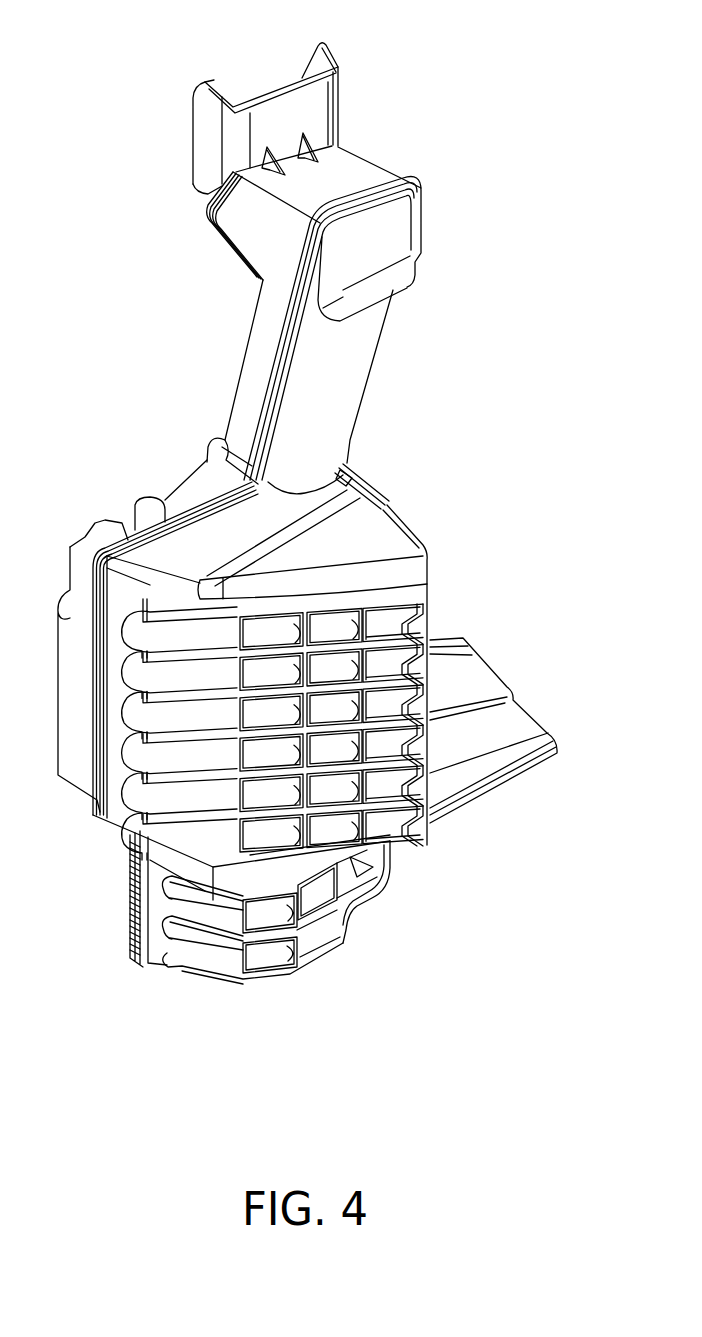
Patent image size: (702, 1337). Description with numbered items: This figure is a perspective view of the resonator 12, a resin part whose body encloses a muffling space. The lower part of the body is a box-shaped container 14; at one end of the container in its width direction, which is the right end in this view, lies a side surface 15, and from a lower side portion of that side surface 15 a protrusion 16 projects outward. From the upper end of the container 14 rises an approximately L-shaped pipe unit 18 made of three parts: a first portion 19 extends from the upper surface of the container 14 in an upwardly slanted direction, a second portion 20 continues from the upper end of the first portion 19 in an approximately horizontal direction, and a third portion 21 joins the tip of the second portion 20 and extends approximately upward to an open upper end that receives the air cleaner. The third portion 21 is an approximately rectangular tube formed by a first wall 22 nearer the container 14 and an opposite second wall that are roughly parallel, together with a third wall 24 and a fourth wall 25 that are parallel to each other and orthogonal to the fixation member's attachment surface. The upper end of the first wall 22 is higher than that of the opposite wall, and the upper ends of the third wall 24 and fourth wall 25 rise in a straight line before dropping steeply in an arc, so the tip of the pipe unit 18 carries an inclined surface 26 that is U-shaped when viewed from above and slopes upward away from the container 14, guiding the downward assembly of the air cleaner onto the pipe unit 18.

The resonator 12 is at (489, 102).
The container 14 is at (413, 521).
The side surface 15 is at (368, 476).
The protrusion 16 is at (488, 672).
The pipe unit 18 is at (367, 376).
The first portion 19 is at (362, 401).
The second portion 20 is at (353, 181).
The third portion 21 is at (203, 146).
The first wall 22 is at (300, 115).
The third wall 24 is at (330, 58).
The fourth wall 25 is at (203, 165).
The inclined surface 26 is at (225, 80).